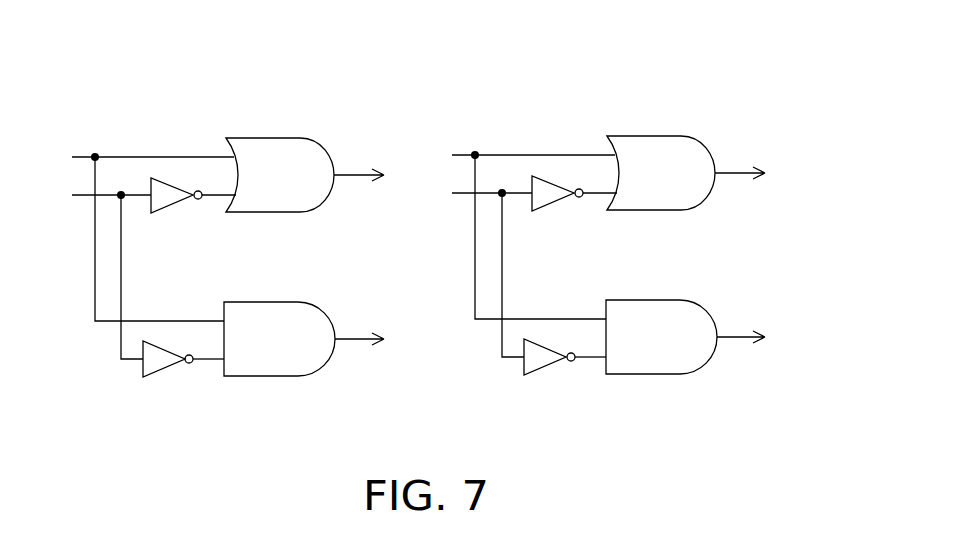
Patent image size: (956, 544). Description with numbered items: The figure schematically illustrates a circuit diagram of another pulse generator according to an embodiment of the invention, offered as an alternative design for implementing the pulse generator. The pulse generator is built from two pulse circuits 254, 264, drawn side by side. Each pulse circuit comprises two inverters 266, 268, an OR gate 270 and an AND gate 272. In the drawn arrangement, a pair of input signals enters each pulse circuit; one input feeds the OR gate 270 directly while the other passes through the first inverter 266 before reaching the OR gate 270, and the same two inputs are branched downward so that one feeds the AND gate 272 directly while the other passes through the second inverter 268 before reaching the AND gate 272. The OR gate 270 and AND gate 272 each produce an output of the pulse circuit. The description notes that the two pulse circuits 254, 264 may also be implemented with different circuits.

The pulse circuit 254 is at (367, 97).
The pulse circuit 264 is at (747, 97).
The inverter 266 is at (172, 211).
The inverter 268 is at (161, 375).
The OR gate 270 is at (317, 212).
The AND gate 272 is at (312, 376).